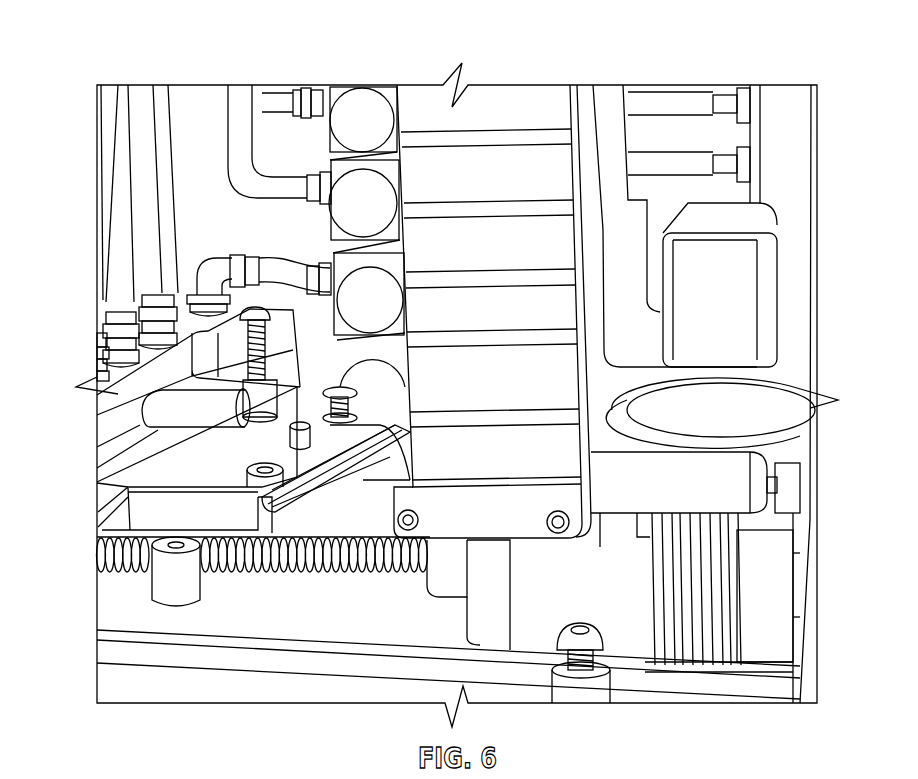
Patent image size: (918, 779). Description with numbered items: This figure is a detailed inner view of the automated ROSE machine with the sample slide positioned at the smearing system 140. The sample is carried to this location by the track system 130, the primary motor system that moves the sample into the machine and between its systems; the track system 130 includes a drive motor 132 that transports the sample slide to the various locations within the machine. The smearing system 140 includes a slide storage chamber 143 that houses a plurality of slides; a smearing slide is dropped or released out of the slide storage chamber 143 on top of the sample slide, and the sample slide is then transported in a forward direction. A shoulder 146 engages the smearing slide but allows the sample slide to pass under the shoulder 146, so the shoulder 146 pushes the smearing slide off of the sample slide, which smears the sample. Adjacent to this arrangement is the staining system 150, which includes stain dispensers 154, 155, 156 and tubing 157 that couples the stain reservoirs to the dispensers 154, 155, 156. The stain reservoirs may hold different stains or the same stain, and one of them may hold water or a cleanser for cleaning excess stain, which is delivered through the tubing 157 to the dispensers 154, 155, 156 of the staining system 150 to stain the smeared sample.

The track system 130 is at (228, 578).
The drive motor 132 is at (455, 565).
The slide-smearer system 140 is at (400, 473).
The slide storage chamber 143 is at (575, 282).
The shoulder 146 is at (320, 485).
The staining system 150 is at (123, 412).
The stain dispenser 154 is at (163, 320).
The stain dispenser 155 is at (128, 337).
The stain dispenser 156 is at (103, 350).
The tubing 157 is at (247, 167).